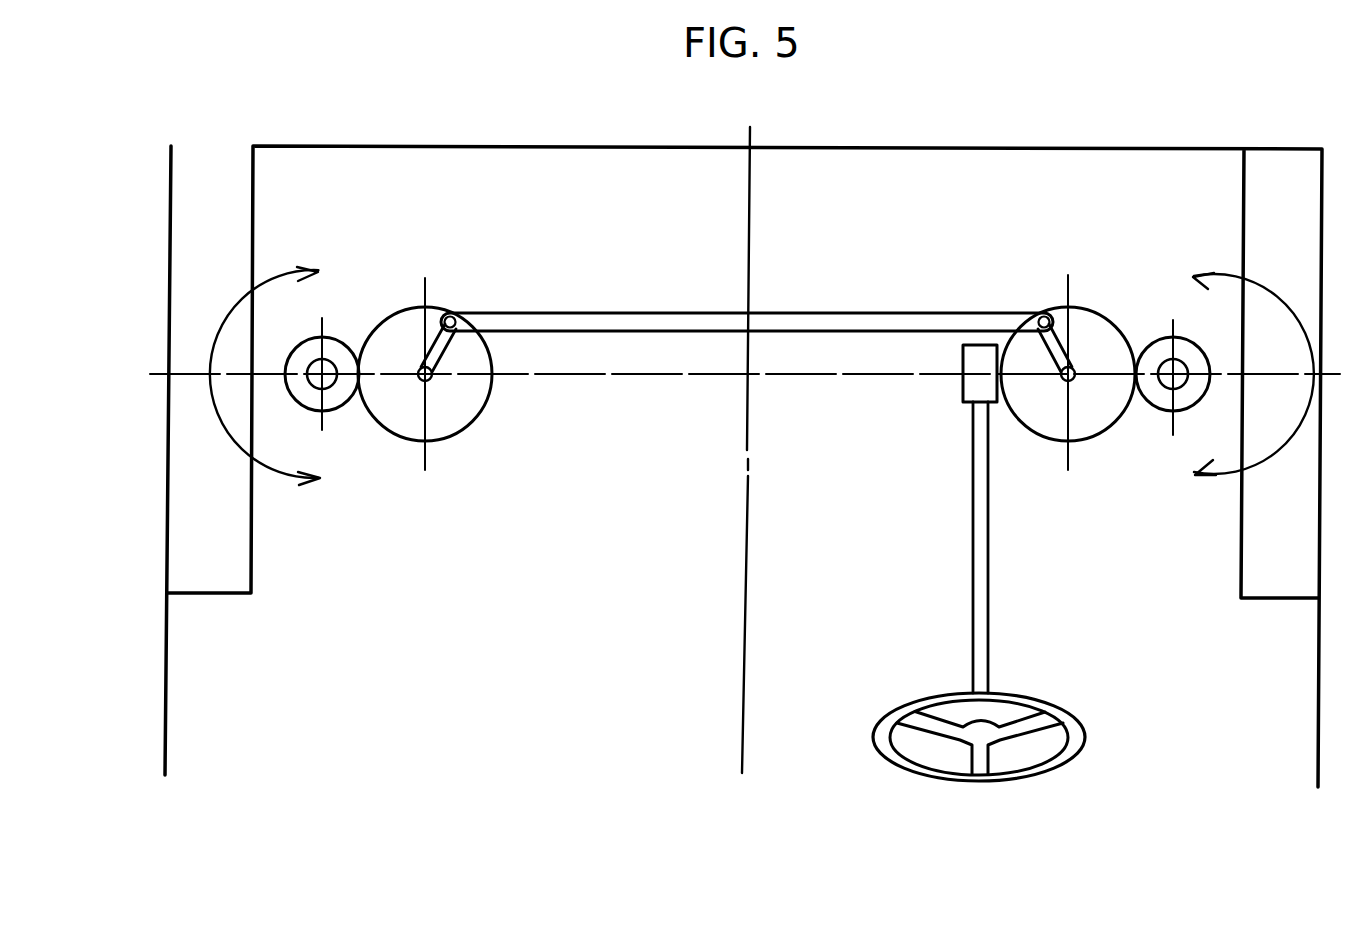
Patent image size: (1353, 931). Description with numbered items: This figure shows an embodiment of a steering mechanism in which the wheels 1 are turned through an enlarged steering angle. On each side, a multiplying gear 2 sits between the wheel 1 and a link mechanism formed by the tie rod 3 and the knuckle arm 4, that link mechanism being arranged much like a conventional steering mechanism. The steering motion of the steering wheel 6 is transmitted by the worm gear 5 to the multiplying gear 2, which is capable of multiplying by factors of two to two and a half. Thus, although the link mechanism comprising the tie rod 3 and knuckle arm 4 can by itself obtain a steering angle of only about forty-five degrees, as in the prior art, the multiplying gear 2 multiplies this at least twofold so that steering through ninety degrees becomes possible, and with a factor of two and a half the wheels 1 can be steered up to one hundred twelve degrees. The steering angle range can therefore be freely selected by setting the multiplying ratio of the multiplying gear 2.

The wheels 1 is at (218, 593).
The multiplying gears 2 is at (380, 428).
The tie rod 3 is at (866, 313).
The knuckle arm 4 is at (1080, 307).
The worm gear 5 is at (963, 396).
The steering wheel 6 is at (1040, 773).